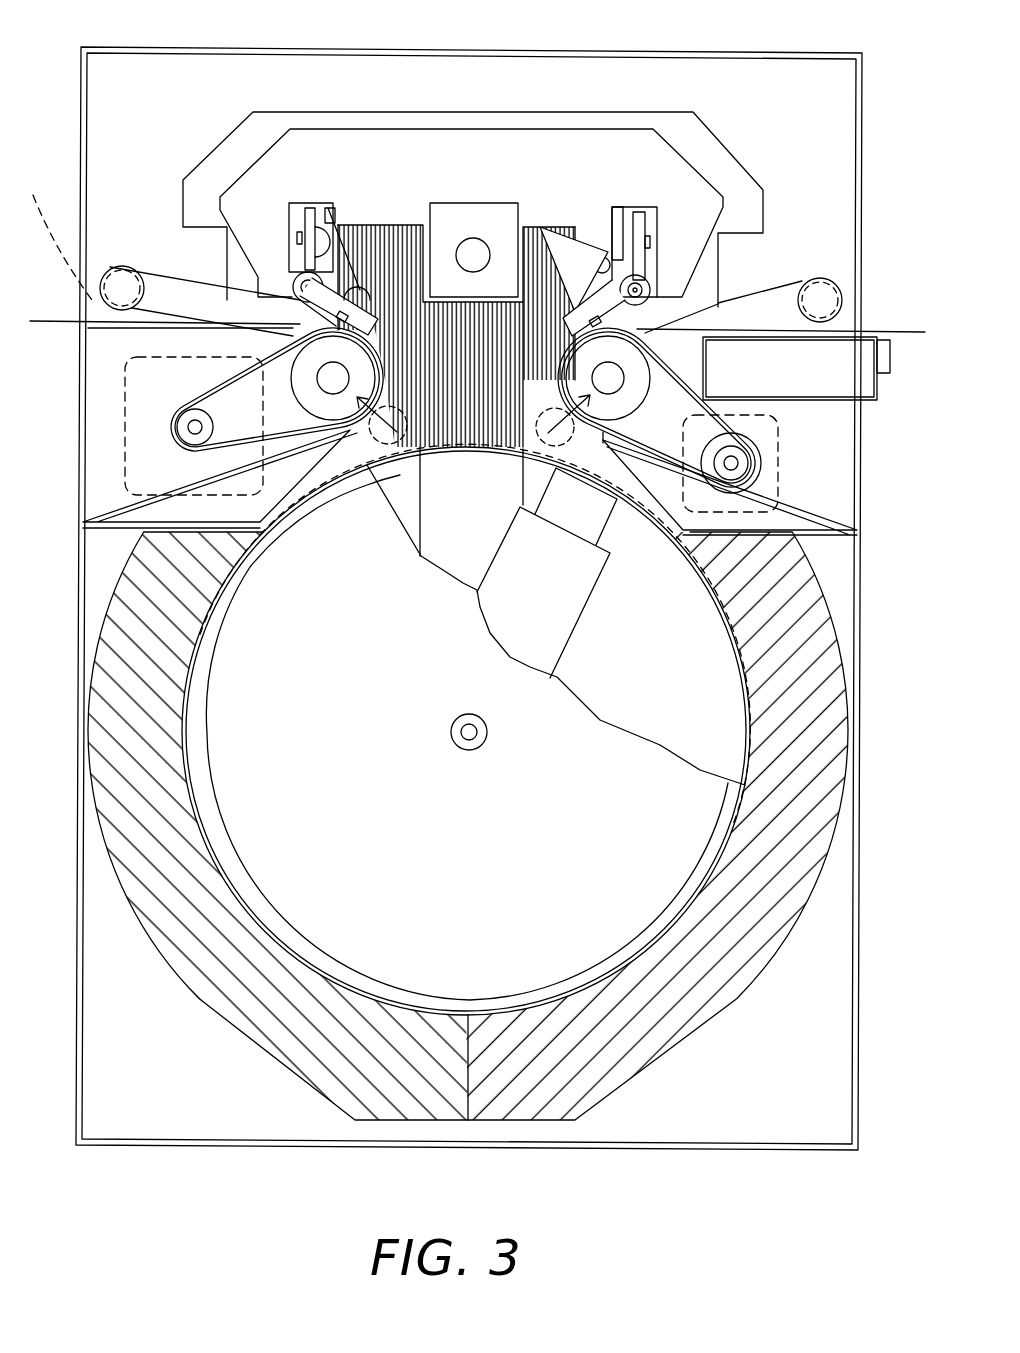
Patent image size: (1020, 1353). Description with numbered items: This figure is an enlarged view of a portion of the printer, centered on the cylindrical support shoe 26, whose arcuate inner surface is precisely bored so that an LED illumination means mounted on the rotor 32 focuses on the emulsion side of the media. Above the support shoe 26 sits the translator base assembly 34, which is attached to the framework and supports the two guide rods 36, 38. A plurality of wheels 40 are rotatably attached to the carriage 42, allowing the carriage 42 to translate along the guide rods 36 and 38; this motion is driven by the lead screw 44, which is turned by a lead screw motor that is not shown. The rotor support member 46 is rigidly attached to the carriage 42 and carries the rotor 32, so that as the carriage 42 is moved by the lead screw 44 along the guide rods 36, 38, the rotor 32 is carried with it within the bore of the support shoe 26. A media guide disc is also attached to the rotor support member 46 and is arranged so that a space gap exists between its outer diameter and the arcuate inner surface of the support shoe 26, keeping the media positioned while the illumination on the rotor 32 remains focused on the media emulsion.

The cylindrical support shoe 26 is at (652, 1035).
The rotor 32 is at (565, 590).
The translator base assembly 34 is at (436, 83).
The guide rod 36 is at (297, 290).
The guide rod 38 is at (652, 293).
The wheels 40 is at (313, 220).
The carriage 42 is at (390, 227).
The lead screw 44 is at (476, 248).
The rotor support member 46 is at (488, 489).